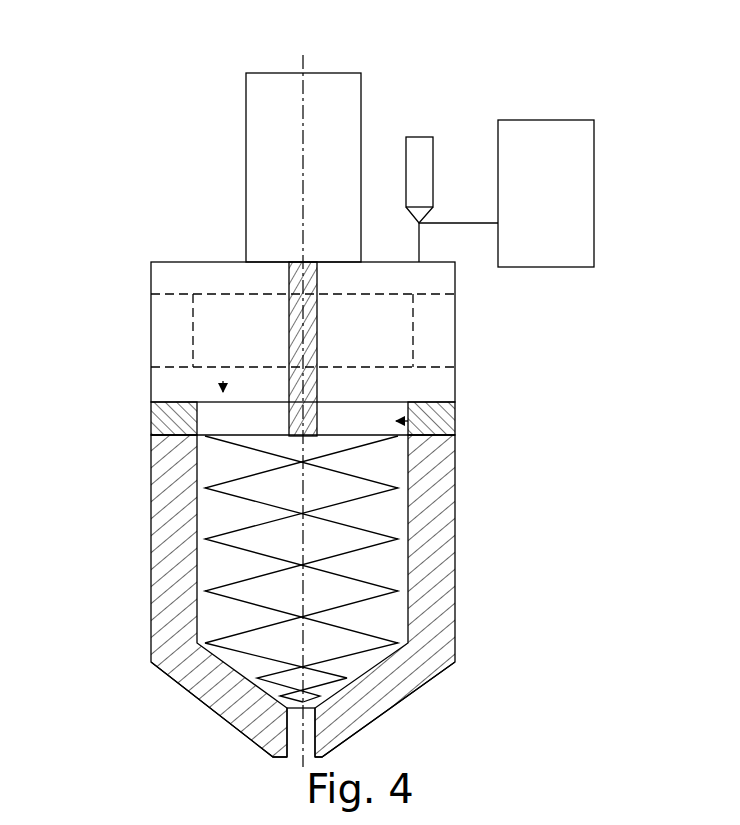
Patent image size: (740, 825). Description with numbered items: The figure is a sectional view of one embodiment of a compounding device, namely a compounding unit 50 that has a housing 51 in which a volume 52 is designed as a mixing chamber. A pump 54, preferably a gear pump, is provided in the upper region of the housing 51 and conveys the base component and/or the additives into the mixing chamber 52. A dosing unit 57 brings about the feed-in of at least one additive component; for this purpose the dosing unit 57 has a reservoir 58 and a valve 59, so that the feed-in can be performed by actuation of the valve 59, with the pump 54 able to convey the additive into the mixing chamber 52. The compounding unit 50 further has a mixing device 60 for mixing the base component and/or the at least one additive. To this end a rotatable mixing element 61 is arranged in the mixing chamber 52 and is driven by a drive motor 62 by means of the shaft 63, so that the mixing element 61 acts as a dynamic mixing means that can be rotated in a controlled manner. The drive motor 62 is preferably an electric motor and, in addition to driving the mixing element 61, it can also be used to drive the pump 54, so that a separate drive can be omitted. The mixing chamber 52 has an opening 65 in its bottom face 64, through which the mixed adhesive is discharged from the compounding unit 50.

The compounding unit 50 is at (104, 222).
The housing 51 is at (447, 492).
The mixing chamber 52 is at (385, 613).
The pump 54 is at (447, 345).
The dosing unit 57 is at (506, 89).
The reservoir 58 is at (594, 170).
The valve 59 is at (433, 155).
The mixing device 60 is at (114, 333).
The mixing element 61 is at (402, 540).
The drive motor 62 is at (361, 93).
The shaft 63 is at (305, 335).
The bottom face 64 is at (228, 715).
The opening 65 is at (317, 717).